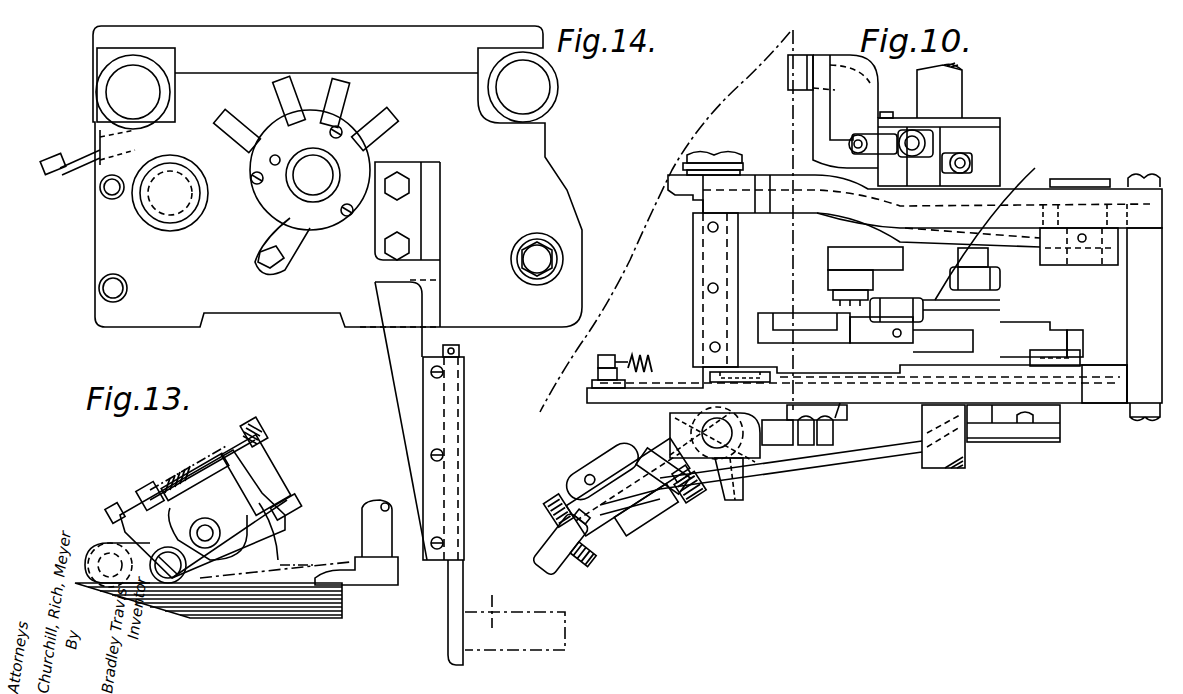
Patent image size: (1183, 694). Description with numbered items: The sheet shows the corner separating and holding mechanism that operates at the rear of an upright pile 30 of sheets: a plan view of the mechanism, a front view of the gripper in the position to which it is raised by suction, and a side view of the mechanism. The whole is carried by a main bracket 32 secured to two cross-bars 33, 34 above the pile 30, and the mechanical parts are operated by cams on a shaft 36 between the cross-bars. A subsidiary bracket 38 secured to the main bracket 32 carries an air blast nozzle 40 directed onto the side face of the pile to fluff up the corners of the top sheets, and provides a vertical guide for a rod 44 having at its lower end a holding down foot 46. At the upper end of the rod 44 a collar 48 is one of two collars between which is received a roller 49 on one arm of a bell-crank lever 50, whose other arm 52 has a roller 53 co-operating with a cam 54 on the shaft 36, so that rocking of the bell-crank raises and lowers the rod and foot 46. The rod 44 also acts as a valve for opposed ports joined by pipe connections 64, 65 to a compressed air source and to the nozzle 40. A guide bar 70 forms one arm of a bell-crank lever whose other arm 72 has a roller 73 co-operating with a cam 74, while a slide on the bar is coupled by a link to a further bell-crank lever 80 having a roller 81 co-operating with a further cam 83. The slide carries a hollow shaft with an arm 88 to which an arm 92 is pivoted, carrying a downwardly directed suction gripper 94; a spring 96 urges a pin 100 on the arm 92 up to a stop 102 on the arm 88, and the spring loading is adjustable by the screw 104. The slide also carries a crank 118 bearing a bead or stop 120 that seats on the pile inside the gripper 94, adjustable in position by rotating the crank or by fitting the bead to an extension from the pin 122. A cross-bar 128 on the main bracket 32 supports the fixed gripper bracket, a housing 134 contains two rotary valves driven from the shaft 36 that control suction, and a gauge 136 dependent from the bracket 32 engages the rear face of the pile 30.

In FIG. 14, the pile 30 is at (515, 610).
In FIG. 13, the pile 30 is at (342, 608).
In FIG. 10, the pile 30 is at (782, 40).
In FIG. 14, the main bracket 32 is at (115, 329).
In FIG. 10, the main bracket 32 is at (1116, 393).
In FIG. 14, the cross-bar 33 is at (96, 88).
In FIG. 14, the cross-bar 34 is at (558, 90).
In FIG. 14, the shaft 36 is at (367, 142).
In FIG. 10, the shaft 36 is at (950, 92).
In FIG. 10, the subsidiary bracket 38 is at (752, 445).
In FIG. 10, the air blast nozzle 40 is at (640, 468).
In FIG. 13, the rod 44 is at (366, 542).
In FIG. 10, the rod 44 is at (762, 472).
In FIG. 13, the holding down foot 46 is at (392, 572).
In FIG. 10, the holding down foot 46 is at (665, 385).
In FIG. 10, the collar 48 is at (730, 495).
In FIG. 10, the roller 49 is at (795, 470).
In FIG. 10, the bell-crank lever 50 is at (865, 464).
In FIG. 10, the arm 52 is at (1050, 337).
In FIG. 10, the roller 53 is at (1080, 356).
In FIG. 10, the cam 54 is at (1000, 347).
In FIG. 10, the pipe connection 64 is at (805, 445).
In FIG. 10, the pipe connection 65 is at (640, 420).
In FIG. 10, the guide bar 70 is at (786, 316).
In FIG. 10, the arm 72 is at (866, 403).
In FIG. 10, the roller 73 is at (870, 310).
In FIG. 10, the cam 74 is at (974, 305).
In FIG. 10, the bell-crank lever 80 is at (860, 237).
In FIG. 10, the roller 81 is at (1000, 280).
In FIG. 10, the cam 83 is at (997, 220).
In FIG. 13, the arm 88 is at (163, 478).
In FIG. 13, the arm 92 is at (261, 539).
In FIG. 13, the suction gripper 94 is at (298, 518).
In FIG. 13, the spring 96 is at (150, 486).
In FIG. 13, the pin 100 is at (178, 482).
In FIG. 13, the stop 102 is at (268, 476).
In FIG. 13, the screw 104 is at (262, 446).
In FIG. 13, the crank 118 is at (110, 508).
In FIG. 13, the bead or stop 120 is at (172, 580).
In FIG. 13, the pin 122 is at (100, 545).
In FIG. 10, the cross-bar 128 is at (692, 266).
In FIG. 14, the housing 134 is at (303, 128).
In FIG. 10, the housing 134 is at (968, 140).
In FIG. 14, the gauge 136 is at (462, 572).